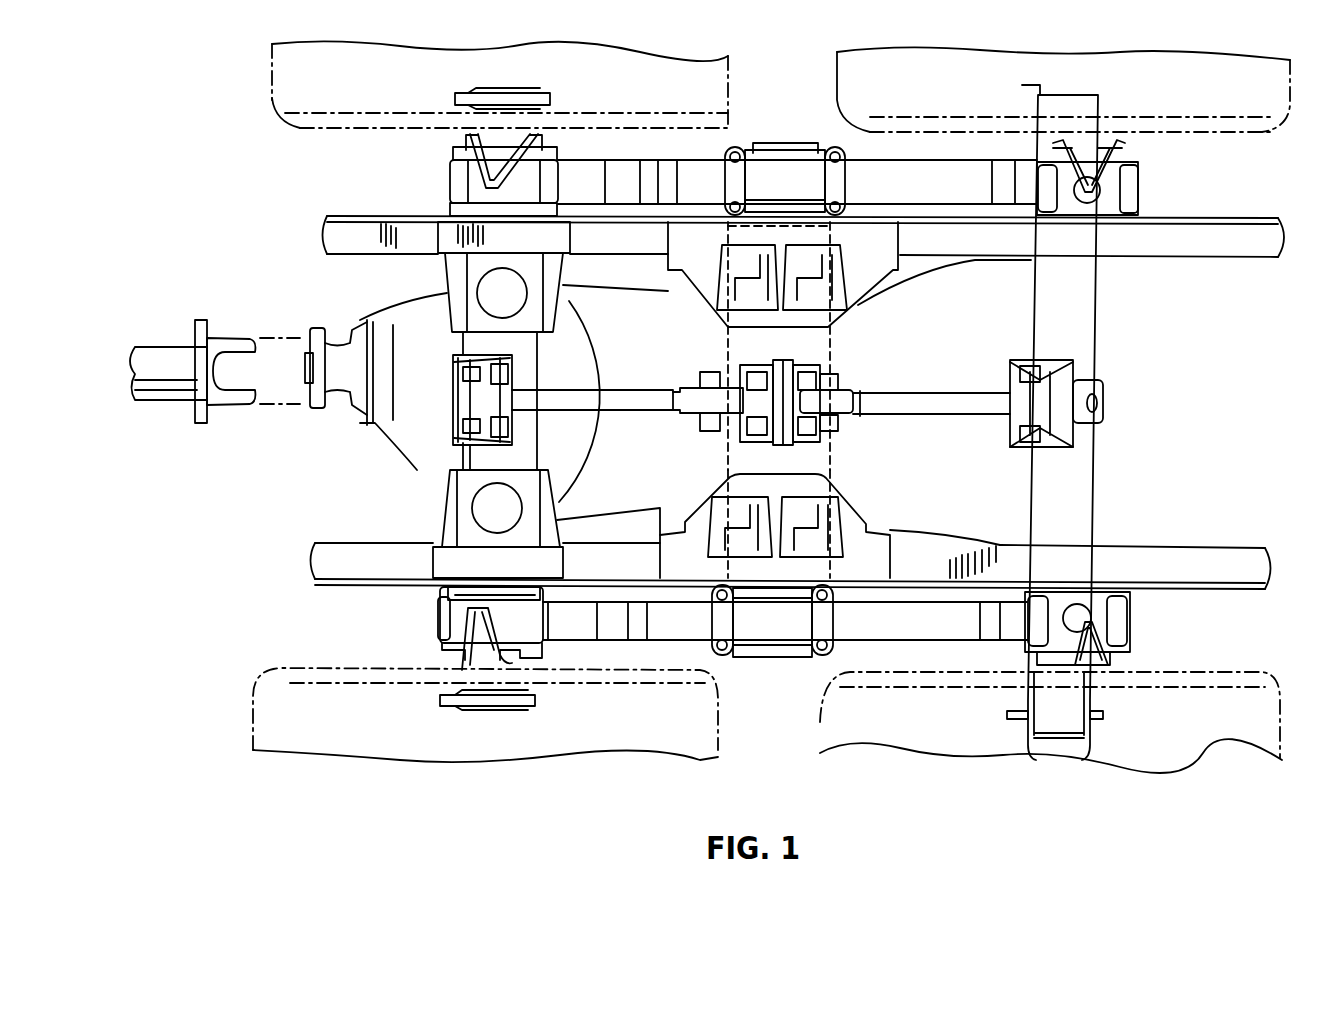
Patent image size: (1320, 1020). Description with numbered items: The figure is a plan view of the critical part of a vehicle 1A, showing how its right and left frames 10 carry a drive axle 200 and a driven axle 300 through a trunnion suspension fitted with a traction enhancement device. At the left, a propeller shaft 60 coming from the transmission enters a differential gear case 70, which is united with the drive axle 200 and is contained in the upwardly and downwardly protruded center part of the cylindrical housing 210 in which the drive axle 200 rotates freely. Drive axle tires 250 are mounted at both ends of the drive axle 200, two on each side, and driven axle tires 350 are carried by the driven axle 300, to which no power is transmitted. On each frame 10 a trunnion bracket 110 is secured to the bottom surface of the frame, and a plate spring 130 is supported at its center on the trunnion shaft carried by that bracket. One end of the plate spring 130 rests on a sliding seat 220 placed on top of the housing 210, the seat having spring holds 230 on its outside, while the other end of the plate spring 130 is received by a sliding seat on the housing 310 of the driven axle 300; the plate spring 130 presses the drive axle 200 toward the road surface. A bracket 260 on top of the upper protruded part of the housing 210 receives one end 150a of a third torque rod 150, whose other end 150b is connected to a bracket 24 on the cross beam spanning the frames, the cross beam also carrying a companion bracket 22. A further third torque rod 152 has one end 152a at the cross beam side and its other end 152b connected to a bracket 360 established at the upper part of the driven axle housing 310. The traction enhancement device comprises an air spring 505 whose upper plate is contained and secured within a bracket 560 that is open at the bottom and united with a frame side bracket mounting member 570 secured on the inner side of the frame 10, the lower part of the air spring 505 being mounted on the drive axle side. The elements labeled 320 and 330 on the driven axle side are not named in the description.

The frame 10 is at (1140, 246).
The vehicle 1A is at (1195, 380).
The bracket 22 is at (760, 442).
The bracket 24 is at (800, 442).
The propeller shaft 60 is at (165, 355).
The differential gear case 70 is at (410, 325).
The trunnion bracket 110 is at (790, 145).
The plate spring 130 is at (708, 172).
The third torque rod 150 is at (626, 400).
The one end of third torque rod 150a is at (500, 403).
The other end of third torque rod 150b is at (695, 395).
The third torque rod 152 is at (915, 400).
The one end of third torque rod 152a is at (838, 400).
The other end of third torque rod 152b is at (1018, 400).
The drive axle 200 is at (432, 448).
The housing 210 is at (462, 455).
The sliding seat 220 is at (445, 595).
The spring holds 230 is at (455, 660).
The drive axle tires 250 is at (412, 89).
The bracket 260 is at (462, 420).
The driven axle 300 is at (1108, 467).
The housing 310 is at (1080, 520).
The upper bracket 320 is at (1137, 158).
The retaining clip 330 is at (1127, 144).
The driven axle tires 350 is at (978, 91).
The bracket 360 is at (1098, 383).
The air spring 505 is at (510, 292).
The bracket 560 is at (555, 505).
The frame side bracket mounting member 570 is at (445, 565).